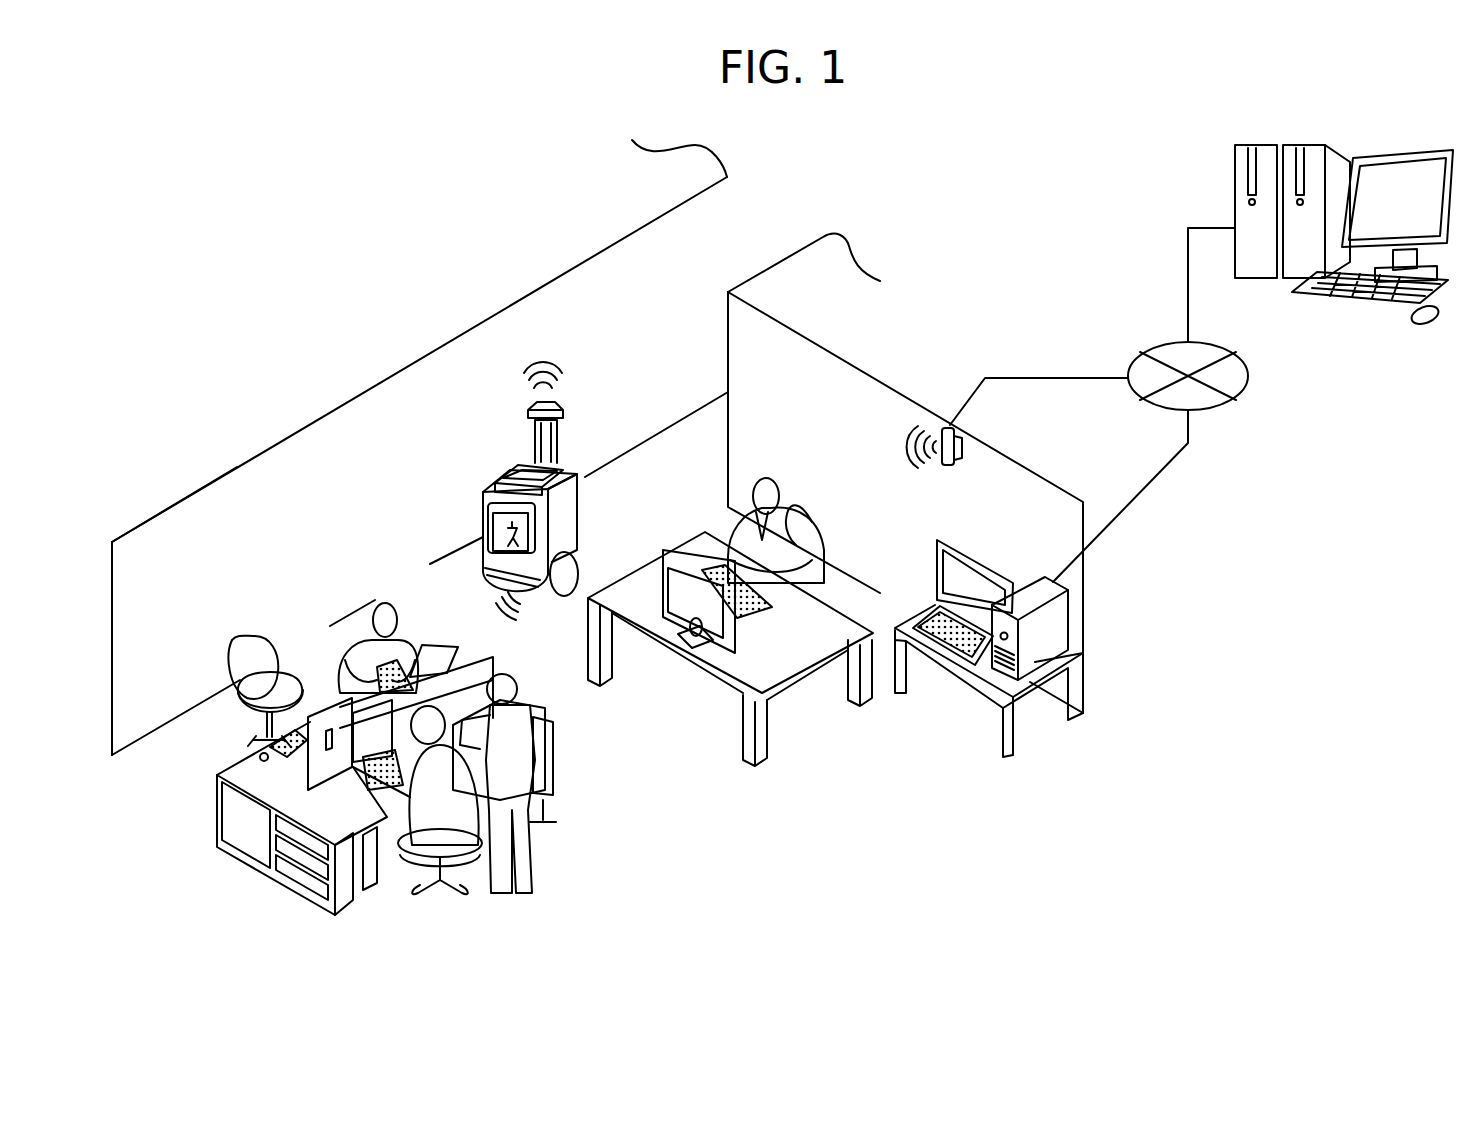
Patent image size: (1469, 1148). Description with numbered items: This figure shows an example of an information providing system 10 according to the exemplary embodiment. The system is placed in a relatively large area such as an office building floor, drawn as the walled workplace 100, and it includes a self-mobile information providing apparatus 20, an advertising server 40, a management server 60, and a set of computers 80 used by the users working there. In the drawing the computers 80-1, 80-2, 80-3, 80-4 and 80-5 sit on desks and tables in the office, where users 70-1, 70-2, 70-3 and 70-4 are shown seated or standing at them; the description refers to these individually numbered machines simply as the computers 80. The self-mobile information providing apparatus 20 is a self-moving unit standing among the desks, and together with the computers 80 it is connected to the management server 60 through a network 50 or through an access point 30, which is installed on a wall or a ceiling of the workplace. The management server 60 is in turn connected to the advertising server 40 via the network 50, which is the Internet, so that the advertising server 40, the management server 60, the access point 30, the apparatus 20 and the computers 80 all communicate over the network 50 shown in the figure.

The information providing system 10 is at (592, 278).
The wall 100 is at (237, 467).
The self-mobile information providing apparatus 20 is at (483, 497).
The access point 30 is at (953, 466).
The advertising server 40 is at (1400, 152).
The network 50 is at (1249, 376).
The management server 60 is at (1033, 598).
The user 70-1 is at (777, 482).
The user 70-2 is at (358, 636).
The user 70-3 is at (403, 828).
The user 70-4 is at (533, 864).
The computer 80 is at (760, 655).
The computer 80-1 is at (328, 716).
The computer 80-2 is at (453, 660).
The computer 80-3 is at (725, 637).
The computer 80-4 is at (453, 727).
The computer 80-5 is at (360, 752).